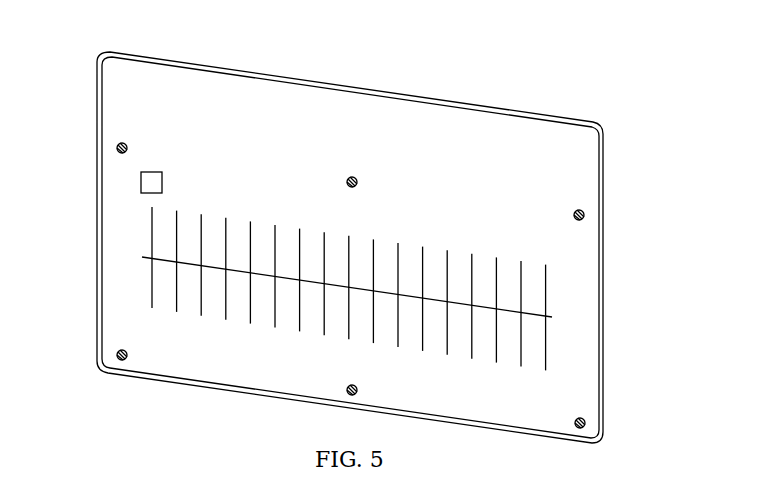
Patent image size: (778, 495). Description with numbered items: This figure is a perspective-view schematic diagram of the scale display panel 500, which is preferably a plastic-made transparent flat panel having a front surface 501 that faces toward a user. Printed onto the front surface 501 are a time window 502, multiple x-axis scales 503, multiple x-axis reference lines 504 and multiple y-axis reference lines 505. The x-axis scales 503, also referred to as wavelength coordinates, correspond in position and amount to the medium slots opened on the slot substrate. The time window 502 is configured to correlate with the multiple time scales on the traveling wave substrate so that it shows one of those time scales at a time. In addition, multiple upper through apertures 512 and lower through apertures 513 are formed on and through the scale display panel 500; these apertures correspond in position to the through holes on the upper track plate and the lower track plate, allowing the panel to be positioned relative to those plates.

The scale display panel 500 is at (79, 222).
The front surface 501 is at (350, 247).
The time window 502 is at (151, 171).
The x-axis scales 503 is at (175, 345).
The x-axis reference lines 504 is at (546, 283).
The y-axis reference lines 505 is at (550, 318).
The upper through apertures 512 is at (585, 216).
The lower through apertures 513 is at (586, 424).